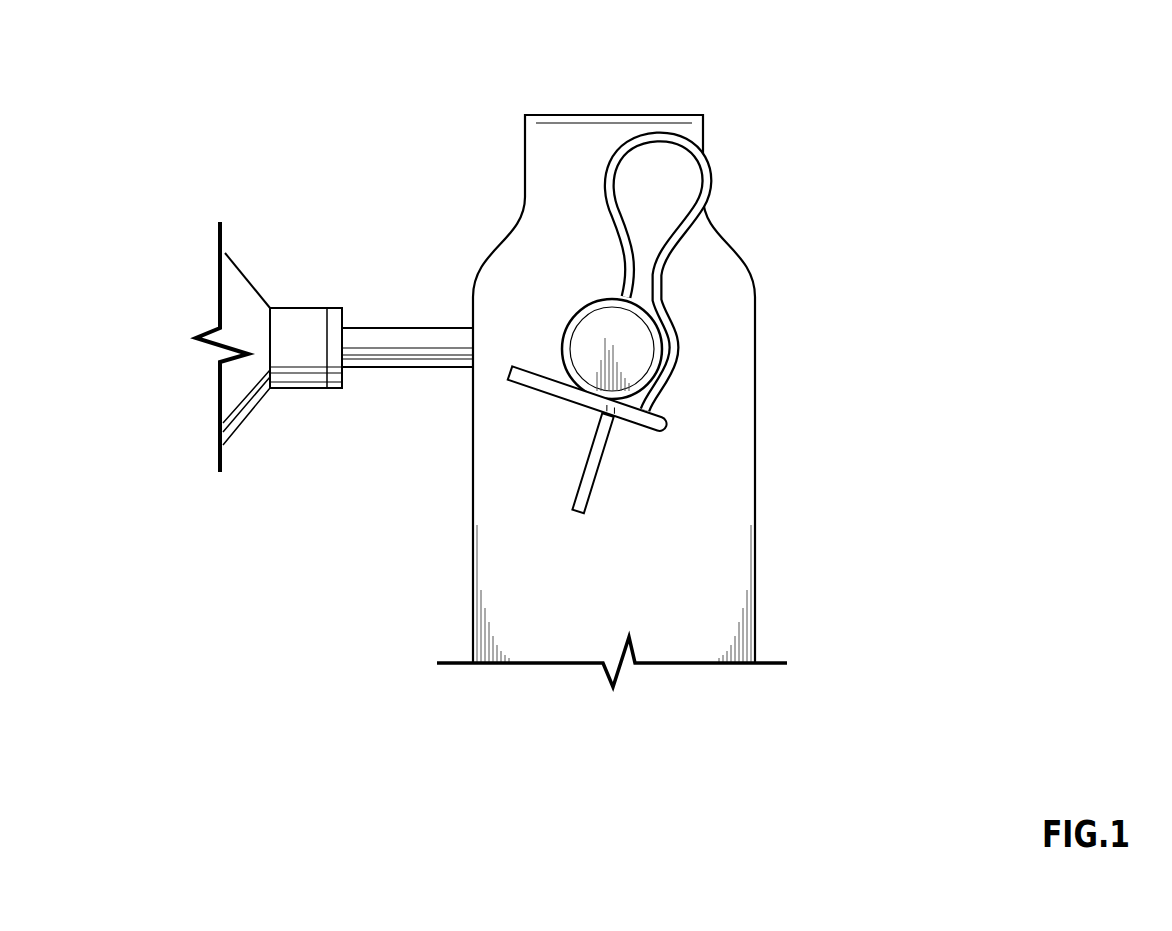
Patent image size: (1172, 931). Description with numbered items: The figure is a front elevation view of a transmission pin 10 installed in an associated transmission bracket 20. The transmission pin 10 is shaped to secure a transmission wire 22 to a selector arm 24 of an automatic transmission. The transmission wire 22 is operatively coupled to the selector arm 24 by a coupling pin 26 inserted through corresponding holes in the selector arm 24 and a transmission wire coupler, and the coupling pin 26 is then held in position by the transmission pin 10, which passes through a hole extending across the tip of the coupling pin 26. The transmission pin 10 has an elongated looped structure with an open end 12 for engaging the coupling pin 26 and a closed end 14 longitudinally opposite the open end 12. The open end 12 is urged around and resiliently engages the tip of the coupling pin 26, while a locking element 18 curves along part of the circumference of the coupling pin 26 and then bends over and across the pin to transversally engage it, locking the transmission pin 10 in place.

The transmission pin 10 is at (698, 227).
The open end 12 is at (645, 452).
The closed end 14 is at (662, 142).
The locking element 18 is at (650, 397).
The transmission bracket 20 is at (480, 160).
The transmission wire 22 is at (299, 323).
The selector arm 24 is at (616, 127).
The coupling pin 26 is at (640, 343).